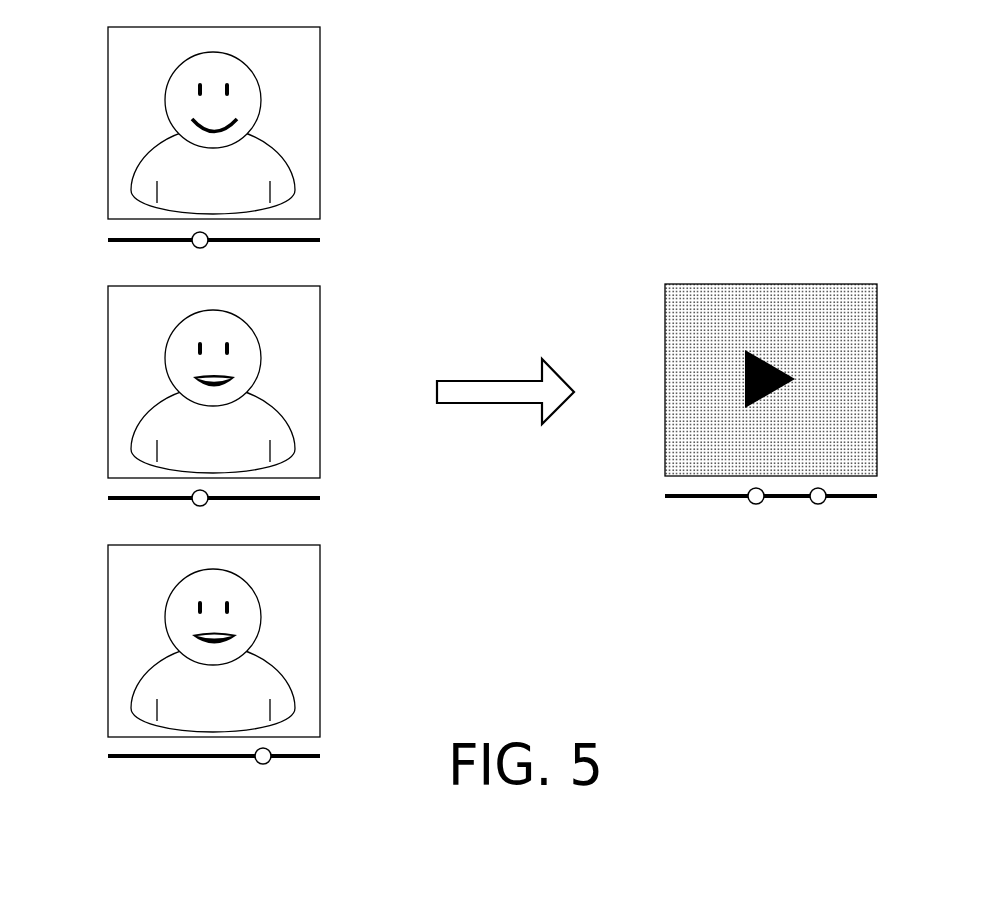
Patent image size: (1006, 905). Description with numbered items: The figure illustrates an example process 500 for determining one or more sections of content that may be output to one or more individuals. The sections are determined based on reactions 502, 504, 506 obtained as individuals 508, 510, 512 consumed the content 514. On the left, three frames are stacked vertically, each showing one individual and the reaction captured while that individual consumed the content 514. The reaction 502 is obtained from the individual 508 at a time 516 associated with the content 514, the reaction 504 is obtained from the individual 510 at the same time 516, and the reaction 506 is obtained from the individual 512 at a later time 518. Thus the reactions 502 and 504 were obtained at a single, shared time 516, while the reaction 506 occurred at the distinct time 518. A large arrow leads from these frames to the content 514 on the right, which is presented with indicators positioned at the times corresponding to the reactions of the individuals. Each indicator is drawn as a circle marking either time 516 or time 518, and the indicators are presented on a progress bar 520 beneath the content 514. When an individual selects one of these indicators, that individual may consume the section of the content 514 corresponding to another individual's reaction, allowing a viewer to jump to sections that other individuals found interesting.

The process 500 is at (631, 160).
The reaction 502 is at (93, 72).
The reaction 504 is at (93, 330).
The reaction 506 is at (93, 586).
The individual 508 is at (284, 120).
The individual 510 is at (285, 382).
The individual 512 is at (292, 645).
The content 514 is at (897, 330).
The time 516 is at (200, 248).
The time 518 is at (263, 764).
The progress bar 520 is at (877, 496).